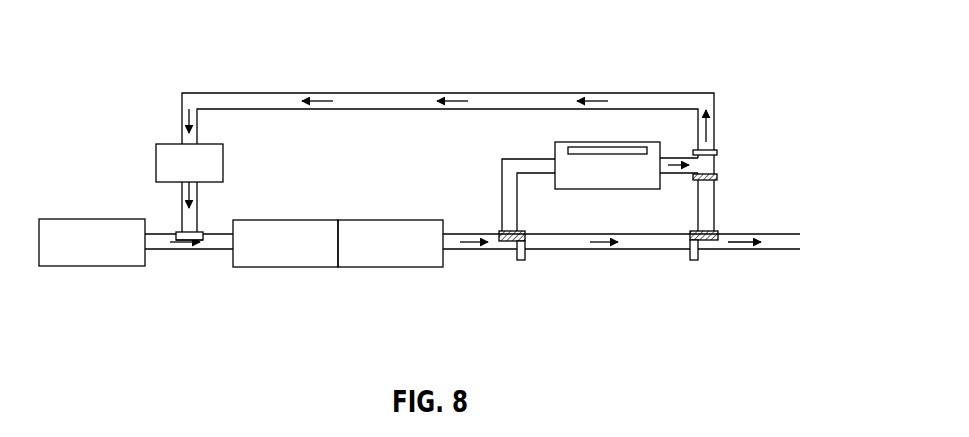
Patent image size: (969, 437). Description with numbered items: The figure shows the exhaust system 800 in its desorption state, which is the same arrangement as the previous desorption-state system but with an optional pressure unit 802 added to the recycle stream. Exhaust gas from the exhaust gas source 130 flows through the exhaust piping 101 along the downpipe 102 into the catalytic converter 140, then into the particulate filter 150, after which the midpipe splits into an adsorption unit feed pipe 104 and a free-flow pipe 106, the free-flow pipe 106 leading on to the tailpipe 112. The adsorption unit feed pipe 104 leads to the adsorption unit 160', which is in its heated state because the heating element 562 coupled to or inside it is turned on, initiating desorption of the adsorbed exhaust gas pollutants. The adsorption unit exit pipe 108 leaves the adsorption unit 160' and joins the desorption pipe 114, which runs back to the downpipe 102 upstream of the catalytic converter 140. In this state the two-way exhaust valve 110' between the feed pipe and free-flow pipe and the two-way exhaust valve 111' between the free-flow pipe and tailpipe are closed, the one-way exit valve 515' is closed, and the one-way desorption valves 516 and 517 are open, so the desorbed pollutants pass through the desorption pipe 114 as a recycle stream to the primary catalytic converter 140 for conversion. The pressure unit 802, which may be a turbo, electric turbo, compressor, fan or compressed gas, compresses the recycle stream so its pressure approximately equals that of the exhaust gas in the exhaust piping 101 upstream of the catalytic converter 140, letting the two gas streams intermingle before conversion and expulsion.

The system 800 is at (145, 52).
The desorption pipe 114 is at (245, 93).
The pressure unit 802 is at (212, 174).
The desorption valve 517 is at (176, 232).
The exhaust gas source 130 is at (113, 256).
The exhaust piping 101 is at (190, 252).
The downpipe 102 is at (213, 230).
The catalytic converter 140 is at (308, 256).
The particulate filter 150 is at (413, 256).
The two-way exhaust valve 110' is at (476, 225).
The adsorption unit feed pipe 104 is at (502, 159).
The heating element 562 is at (575, 147).
The adsorption unit 160' is at (584, 152).
The desorption valve 516 is at (717, 152).
The exit valve 515' is at (741, 160).
The adsorption unit exit pipe 108 is at (714, 198).
The two-way exhaust valve 111' is at (736, 229).
The free-flow pipe 106 is at (647, 251).
The tailpipe 112 is at (757, 252).